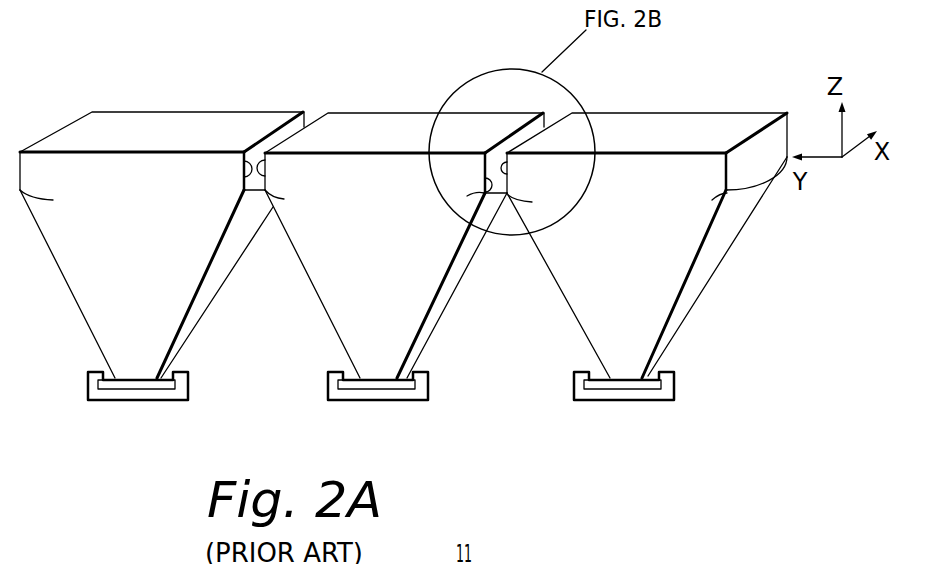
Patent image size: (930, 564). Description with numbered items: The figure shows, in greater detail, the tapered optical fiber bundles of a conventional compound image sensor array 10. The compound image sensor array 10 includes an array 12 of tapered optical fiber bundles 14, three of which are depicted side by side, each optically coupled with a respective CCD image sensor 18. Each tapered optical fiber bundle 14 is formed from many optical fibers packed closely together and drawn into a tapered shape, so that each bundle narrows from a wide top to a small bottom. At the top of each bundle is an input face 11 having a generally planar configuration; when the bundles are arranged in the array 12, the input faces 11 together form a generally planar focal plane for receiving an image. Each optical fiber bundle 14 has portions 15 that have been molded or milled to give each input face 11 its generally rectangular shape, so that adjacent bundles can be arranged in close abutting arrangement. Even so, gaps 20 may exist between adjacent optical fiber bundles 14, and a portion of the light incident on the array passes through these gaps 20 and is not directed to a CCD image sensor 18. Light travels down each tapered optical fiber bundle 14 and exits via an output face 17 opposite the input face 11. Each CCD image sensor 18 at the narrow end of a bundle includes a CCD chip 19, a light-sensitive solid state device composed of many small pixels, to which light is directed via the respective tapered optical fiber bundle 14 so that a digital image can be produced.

The compound image sensor array 10 is at (665, 95).
The input face 11 is at (195, 127).
The array 12 is at (187, 78).
The tapered optical fiber bundle 14 is at (182, 282).
The portions 15 is at (243, 181).
The output face 17 is at (147, 381).
The CCD image sensor 18 is at (87, 382).
The CCD chip 19 is at (122, 381).
The gaps 20 is at (319, 111).